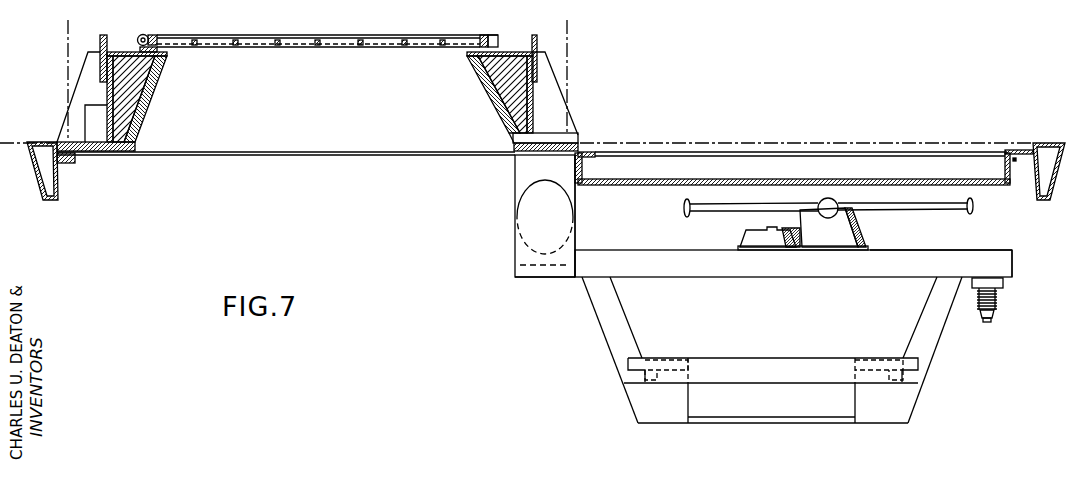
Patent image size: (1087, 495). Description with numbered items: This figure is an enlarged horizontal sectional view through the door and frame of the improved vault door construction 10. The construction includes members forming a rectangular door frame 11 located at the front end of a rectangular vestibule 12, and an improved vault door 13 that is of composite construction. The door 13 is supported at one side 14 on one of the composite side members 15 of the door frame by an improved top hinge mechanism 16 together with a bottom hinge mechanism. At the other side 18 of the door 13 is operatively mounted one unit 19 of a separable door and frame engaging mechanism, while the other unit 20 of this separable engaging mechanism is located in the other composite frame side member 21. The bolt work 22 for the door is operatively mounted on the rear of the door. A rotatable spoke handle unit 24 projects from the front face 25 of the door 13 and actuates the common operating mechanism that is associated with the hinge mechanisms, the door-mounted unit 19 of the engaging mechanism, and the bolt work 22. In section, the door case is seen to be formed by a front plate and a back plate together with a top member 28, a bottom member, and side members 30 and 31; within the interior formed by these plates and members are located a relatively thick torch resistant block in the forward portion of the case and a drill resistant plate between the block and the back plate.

The vault door construction 10 is at (156, 156).
The door frame 11 is at (148, 120).
The vestibule 12 is at (99, 42).
The vault door 13 is at (656, 259).
The one side of the door 14 is at (576, 255).
The composite side member 15 is at (553, 135).
The top hinge mechanism 16 is at (540, 208).
The other side of the door 18 is at (1013, 263).
The unit of separable door and frame engaging mechanism 19 is at (998, 303).
The other unit of separable door and frame engaging mechanism 20 is at (96, 120).
The other composite frame side member 21 is at (155, 87).
The bolt work 22 is at (802, 426).
The spoke handle unit 24 is at (784, 207).
The front face 25 is at (943, 249).
The top member 28 is at (642, 300).
The side member 30 is at (930, 333).
The side member 31 is at (615, 330).